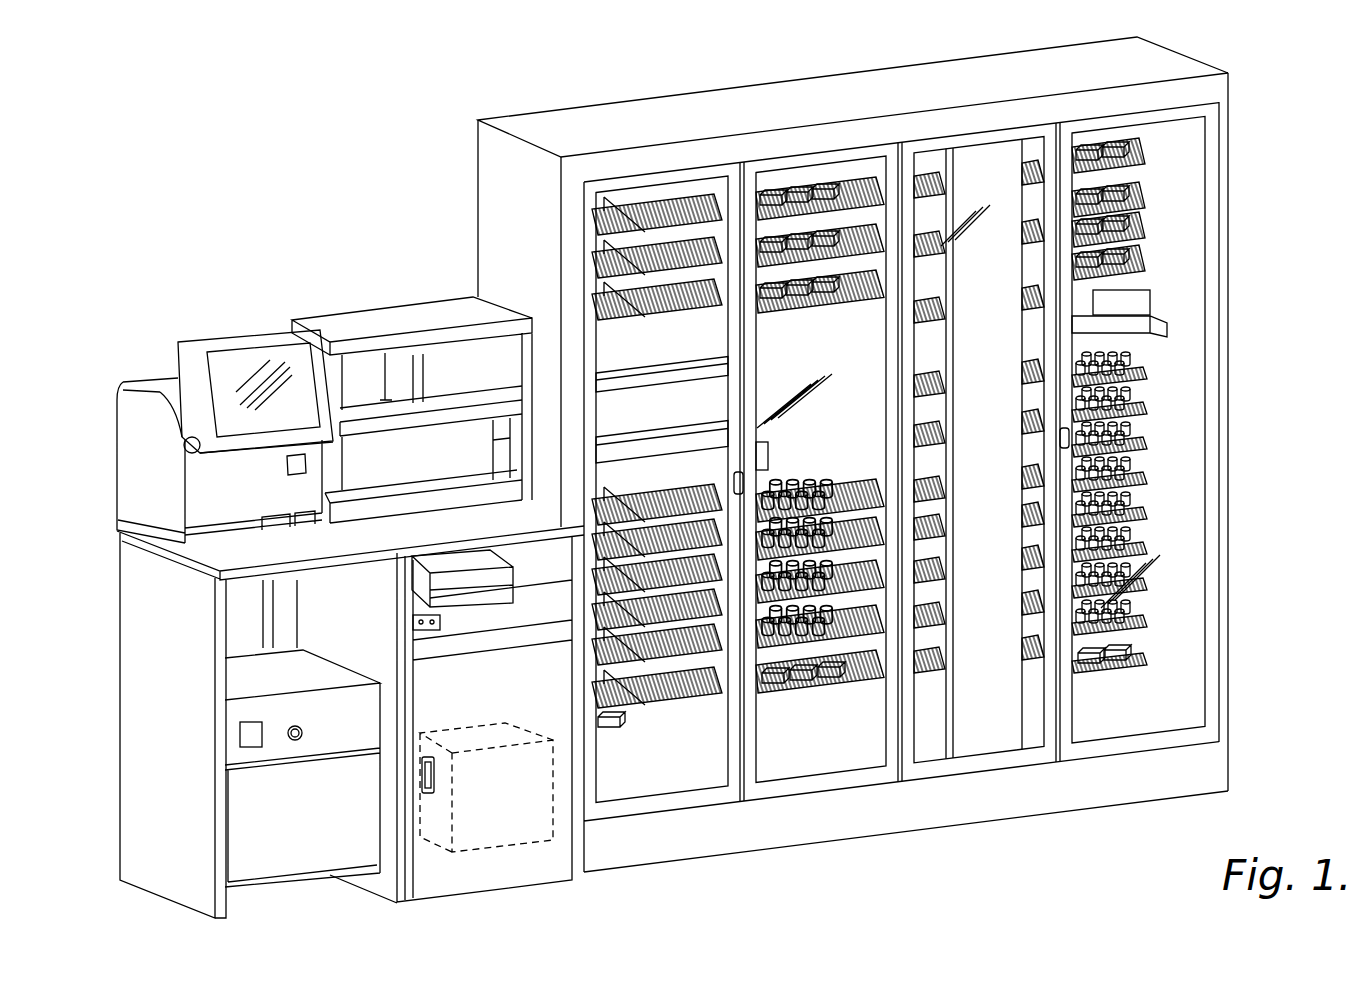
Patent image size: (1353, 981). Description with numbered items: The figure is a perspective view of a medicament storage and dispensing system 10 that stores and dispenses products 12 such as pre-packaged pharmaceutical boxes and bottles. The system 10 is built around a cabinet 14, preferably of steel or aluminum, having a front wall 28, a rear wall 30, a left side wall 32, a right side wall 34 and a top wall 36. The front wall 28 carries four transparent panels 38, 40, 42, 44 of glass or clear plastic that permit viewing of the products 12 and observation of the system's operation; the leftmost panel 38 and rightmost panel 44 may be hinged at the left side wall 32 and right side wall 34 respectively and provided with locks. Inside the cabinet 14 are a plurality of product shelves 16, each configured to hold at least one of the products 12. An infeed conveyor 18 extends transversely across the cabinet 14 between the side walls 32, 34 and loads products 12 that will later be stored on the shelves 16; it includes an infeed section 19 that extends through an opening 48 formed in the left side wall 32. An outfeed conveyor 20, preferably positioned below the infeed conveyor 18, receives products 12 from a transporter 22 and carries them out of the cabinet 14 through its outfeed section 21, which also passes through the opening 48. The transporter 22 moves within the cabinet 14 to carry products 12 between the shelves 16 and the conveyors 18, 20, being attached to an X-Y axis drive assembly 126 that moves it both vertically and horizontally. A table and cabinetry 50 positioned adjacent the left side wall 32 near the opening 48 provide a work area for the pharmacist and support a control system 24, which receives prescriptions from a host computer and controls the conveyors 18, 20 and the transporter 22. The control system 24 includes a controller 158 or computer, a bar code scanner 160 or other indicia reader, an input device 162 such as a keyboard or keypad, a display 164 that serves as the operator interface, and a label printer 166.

The medicament storage and dispensing system 10 is at (668, 66).
The products 12 is at (803, 182).
The cabinet 14 is at (468, 100).
The product shelves 16 is at (597, 258).
The infeed conveyor 18 is at (642, 393).
The infeed section 19 is at (390, 407).
The outfeed conveyor 20 is at (763, 450).
The outfeed section 21 is at (345, 500).
The transporter 22 is at (984, 294).
The control system 24 is at (97, 429).
The front wall 28 is at (932, 822).
The rear wall 30 is at (662, 436).
The left side wall 32 is at (497, 205).
The right side wall 34 is at (1195, 410).
The top wall 36 is at (882, 78).
The transparent panel 38 is at (713, 797).
The transparent panel 40 is at (818, 787).
The transparent panel 42 is at (980, 768).
The transparent panel 44 is at (1110, 750).
The opening 48 is at (487, 440).
The table and cabinetry 50 is at (135, 590).
The X-Y axis drive assembly 126 is at (986, 579).
The controller 158 is at (478, 823).
The bar code scanner 160 is at (290, 470).
The input device 162 is at (242, 535).
The display 164 is at (222, 357).
The label printer 166 is at (440, 628).